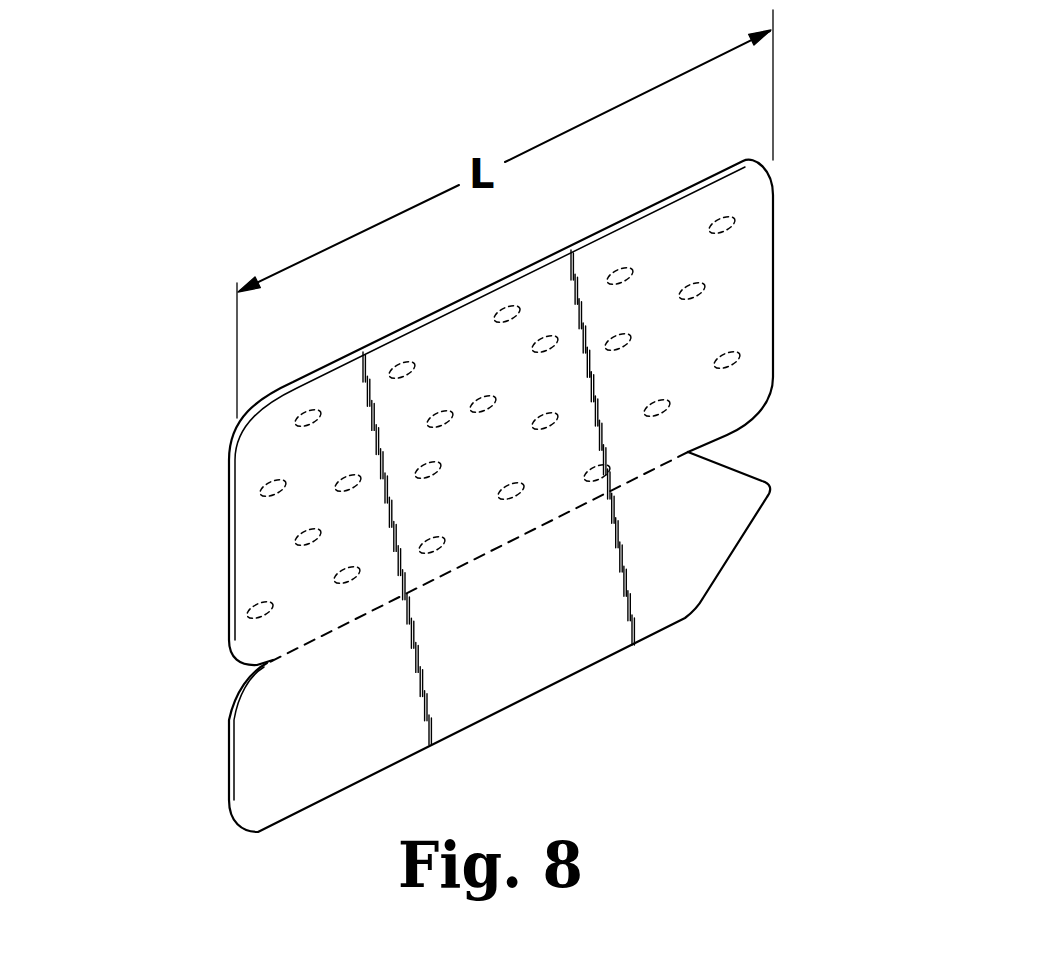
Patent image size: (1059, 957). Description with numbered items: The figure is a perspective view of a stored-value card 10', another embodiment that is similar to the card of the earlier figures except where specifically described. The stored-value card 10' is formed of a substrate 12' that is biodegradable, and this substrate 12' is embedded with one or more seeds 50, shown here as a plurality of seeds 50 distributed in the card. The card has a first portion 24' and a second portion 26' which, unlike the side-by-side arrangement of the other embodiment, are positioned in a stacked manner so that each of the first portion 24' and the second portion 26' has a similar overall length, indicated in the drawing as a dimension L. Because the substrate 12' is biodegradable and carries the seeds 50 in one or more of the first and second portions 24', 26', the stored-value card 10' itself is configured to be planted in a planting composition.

The stored-value card 10' is at (470, 496).
The substrate 12' is at (506, 496).
The first portion 24' is at (452, 412).
The second portion 26' is at (452, 642).
The seeds 50 is at (700, 292).